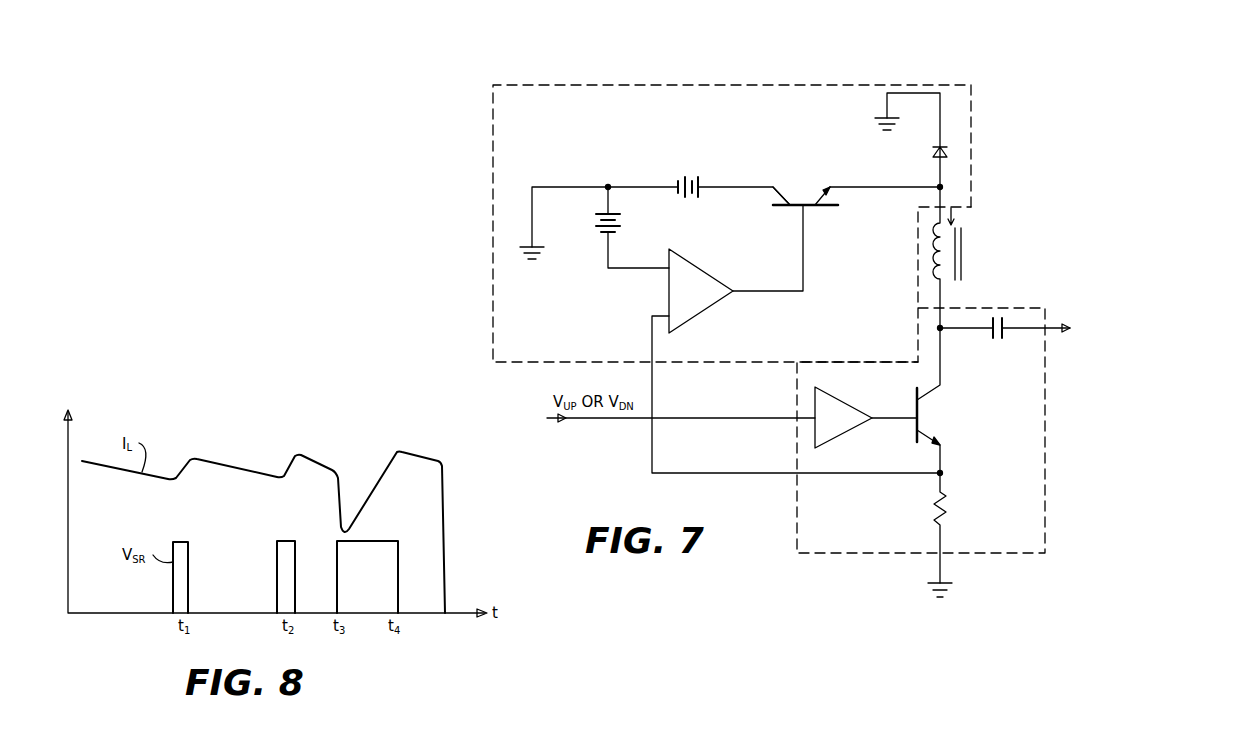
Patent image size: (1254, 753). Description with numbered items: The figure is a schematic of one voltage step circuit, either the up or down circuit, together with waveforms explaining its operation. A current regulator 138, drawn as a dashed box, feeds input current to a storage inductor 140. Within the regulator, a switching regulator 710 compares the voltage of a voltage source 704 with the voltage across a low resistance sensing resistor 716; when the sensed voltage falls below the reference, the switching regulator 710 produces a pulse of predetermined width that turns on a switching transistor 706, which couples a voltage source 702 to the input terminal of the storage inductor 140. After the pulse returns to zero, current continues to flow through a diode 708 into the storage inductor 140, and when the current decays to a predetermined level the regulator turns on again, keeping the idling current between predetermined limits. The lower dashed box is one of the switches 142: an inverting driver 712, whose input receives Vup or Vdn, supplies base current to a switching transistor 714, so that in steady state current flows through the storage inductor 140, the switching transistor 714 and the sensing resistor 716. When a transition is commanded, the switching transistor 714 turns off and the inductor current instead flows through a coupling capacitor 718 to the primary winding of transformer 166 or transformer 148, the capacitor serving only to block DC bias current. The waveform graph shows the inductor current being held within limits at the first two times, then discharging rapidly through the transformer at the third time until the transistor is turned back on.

The current regulator 138 is at (492, 218).
The storage inductor 140 is at (958, 280).
The switch 142 is at (993, 555).
The transformer 148 is at (1129, 352).
The transformer 166 is at (1138, 371).
The voltage source 702 is at (698, 180).
The voltage source 704 is at (622, 222).
The switching transistor 706 is at (812, 208).
The diode 708 is at (887, 140).
The switching regulator 710 is at (693, 317).
The inverting driver 712 is at (815, 426).
The switching transistor 714 is at (920, 428).
The sensing resistor 716 is at (935, 497).
The coupling capacitor 718 is at (1004, 320).